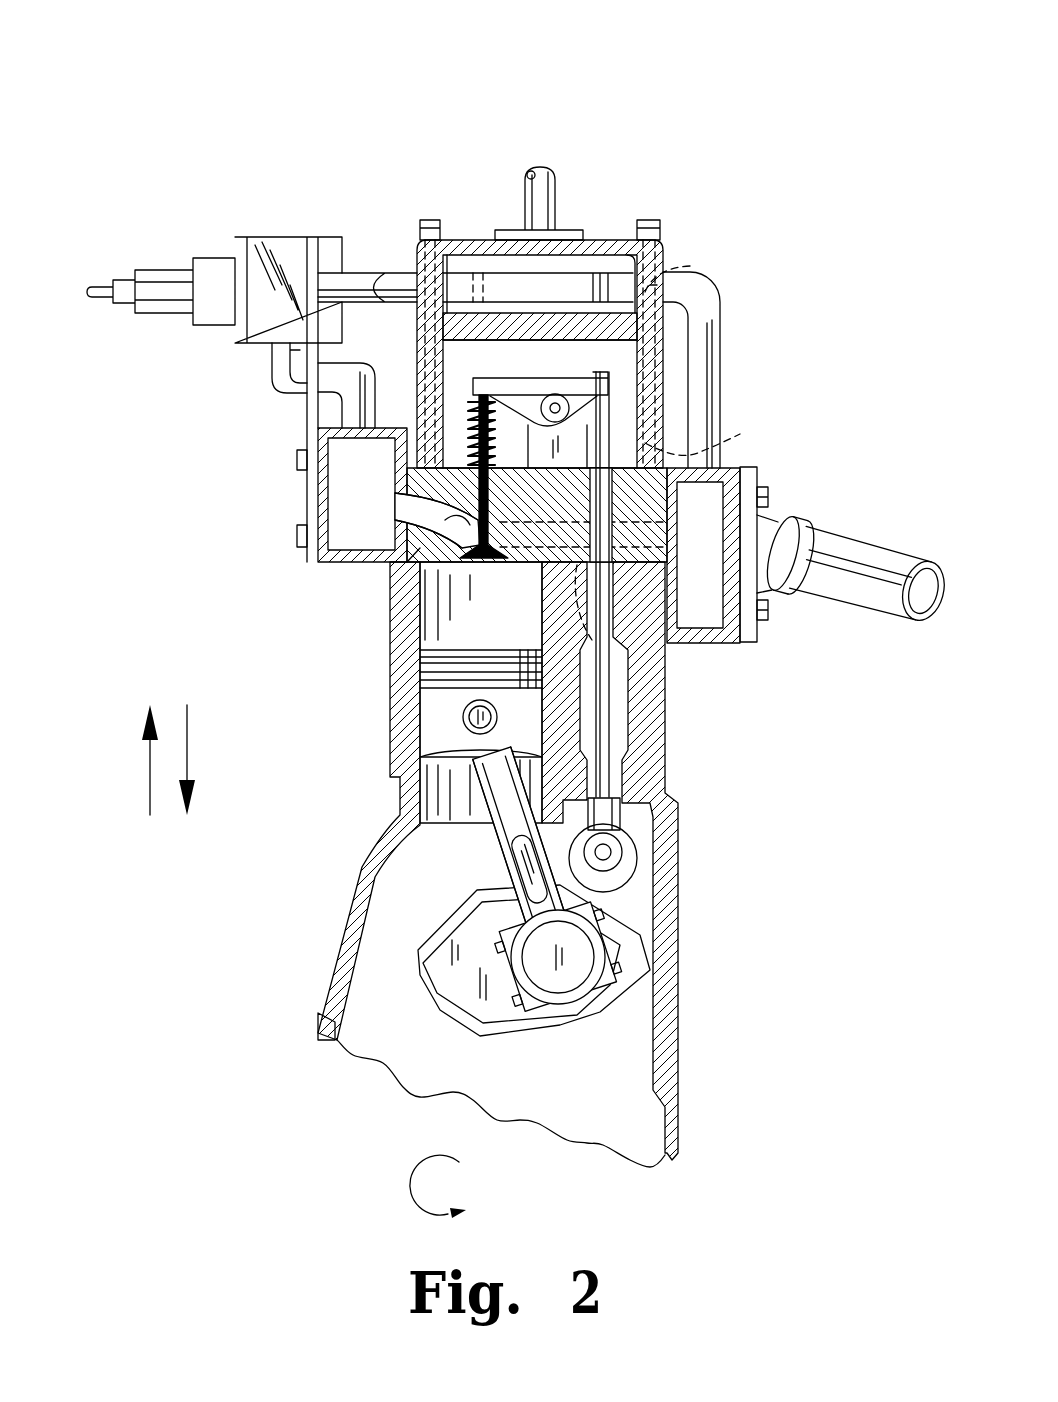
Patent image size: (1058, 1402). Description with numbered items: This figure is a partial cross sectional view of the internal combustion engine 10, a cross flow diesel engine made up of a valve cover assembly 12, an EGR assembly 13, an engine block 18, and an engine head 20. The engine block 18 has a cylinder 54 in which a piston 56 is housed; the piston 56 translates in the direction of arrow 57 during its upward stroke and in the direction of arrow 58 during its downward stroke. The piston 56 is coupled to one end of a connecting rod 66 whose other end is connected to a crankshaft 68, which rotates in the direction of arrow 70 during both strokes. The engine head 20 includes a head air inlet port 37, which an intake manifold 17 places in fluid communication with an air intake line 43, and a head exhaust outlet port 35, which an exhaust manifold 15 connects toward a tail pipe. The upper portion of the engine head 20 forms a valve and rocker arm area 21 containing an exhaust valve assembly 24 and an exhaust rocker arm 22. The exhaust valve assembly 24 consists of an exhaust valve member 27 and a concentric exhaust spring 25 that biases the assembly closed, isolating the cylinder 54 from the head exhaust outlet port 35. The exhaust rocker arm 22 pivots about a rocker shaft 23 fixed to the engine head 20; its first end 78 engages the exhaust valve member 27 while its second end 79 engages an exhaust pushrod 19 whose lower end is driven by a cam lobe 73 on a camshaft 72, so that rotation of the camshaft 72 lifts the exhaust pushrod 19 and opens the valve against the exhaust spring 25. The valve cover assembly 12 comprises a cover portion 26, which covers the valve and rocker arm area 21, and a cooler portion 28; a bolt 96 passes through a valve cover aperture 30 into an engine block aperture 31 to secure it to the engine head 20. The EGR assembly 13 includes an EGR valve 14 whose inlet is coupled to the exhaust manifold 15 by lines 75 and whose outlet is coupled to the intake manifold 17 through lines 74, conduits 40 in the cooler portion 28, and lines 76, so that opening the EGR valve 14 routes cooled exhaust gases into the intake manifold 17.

The internal combustion engine 10 is at (702, 72).
The valve cover assembly 12 is at (586, 297).
The EGR assembly 13 is at (252, 349).
The EGR valve 14 is at (288, 237).
The exhaust manifold 15 is at (328, 562).
The intake manifold 17 is at (722, 643).
The engine block 18 is at (400, 698).
The exhaust pushrod 19 is at (612, 730).
The engine head 20 is at (416, 551).
The valve and rocker arm area 21 is at (625, 391).
The exhaust rocker arm 22 is at (645, 340).
The rocker shaft 23 is at (612, 390).
The exhaust valve assembly 24 is at (468, 384).
The exhaust spring 25 is at (468, 410).
The cover portion 26 is at (414, 355).
The exhaust valve member 27 is at (395, 510).
The cooler portion 28 is at (466, 240).
The valve cover aperture 30 is at (682, 268).
The engine block aperture 31 is at (720, 445).
The head exhaust outlet port 35 is at (423, 563).
The head air inlet port 37 is at (588, 570).
The conduits 40 is at (582, 285).
The air intake line 43 is at (926, 612).
The cylinder 54 is at (430, 632).
The piston 56 is at (447, 728).
The arrow 57 is at (150, 772).
The arrow 58 is at (188, 748).
The connecting rod 66 is at (492, 858).
The crankshaft 68 is at (418, 962).
The arrow 70 is at (408, 1183).
The camshaft 72 is at (612, 853).
The cam lobe 73 is at (600, 893).
The lines 74 is at (372, 272).
The lines 75 is at (272, 388).
The lines 76 is at (695, 266).
The first end 78 is at (483, 377).
The second end 79 is at (605, 380).
The bolt 96 is at (430, 220).